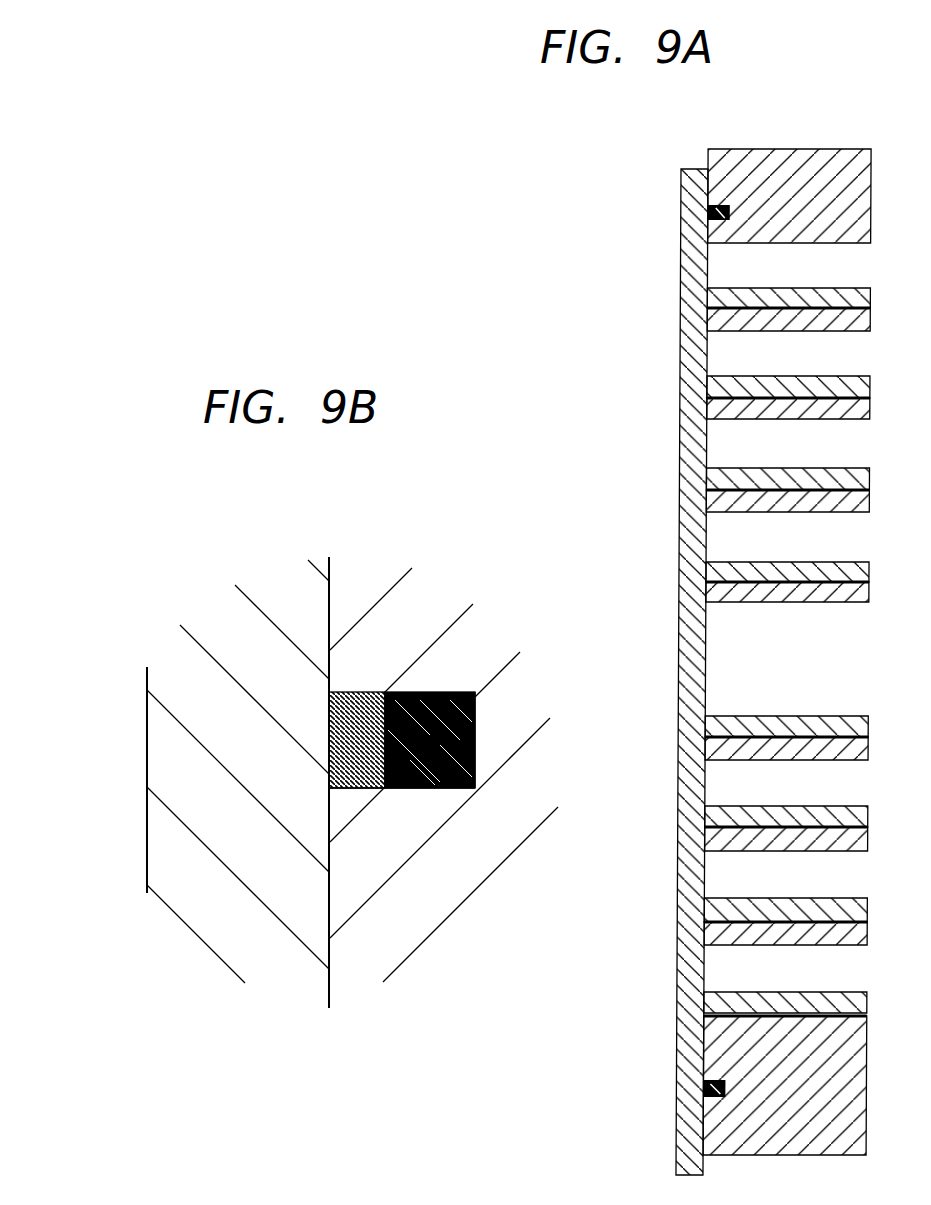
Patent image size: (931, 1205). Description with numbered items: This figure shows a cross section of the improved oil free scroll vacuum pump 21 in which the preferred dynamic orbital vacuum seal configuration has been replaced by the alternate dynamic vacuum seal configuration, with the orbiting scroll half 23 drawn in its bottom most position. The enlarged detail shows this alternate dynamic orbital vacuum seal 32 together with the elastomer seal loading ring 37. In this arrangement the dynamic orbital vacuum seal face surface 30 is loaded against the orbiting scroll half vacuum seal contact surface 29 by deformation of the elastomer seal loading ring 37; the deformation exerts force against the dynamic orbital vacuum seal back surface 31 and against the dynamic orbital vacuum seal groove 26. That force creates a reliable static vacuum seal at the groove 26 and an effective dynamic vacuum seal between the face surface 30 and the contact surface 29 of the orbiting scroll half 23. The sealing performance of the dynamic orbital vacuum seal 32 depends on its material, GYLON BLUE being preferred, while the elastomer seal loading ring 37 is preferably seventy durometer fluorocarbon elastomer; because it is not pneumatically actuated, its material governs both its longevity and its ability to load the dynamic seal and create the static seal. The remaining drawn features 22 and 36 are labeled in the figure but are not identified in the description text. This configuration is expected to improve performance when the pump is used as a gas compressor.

In FIG. 9A, the improved oil free scroll vacuum pump 21 is at (730, 149).
In FIG. 9B, the body 22 is at (443, 907).
In FIG. 9B, the orbiting scroll half 23 is at (218, 707).
In FIG. 9B, the dynamic orbital vacuum seal groove 26 is at (477, 698).
In FIG. 9B, the orbiting scroll half vacuum seal contact surface 29 is at (330, 617).
In FIG. 9B, the dynamic orbital vacuum seal face surface 30 is at (329, 742).
In FIG. 9B, the dynamic orbital vacuum seal back surface 31 is at (385, 788).
In FIG. 9B, the dynamic orbital vacuum seal 32 is at (329, 788).
In FIG. 9B, the block edge 36 is at (475, 788).
In FIG. 9B, the elastomer seal loading ring 37 is at (452, 692).